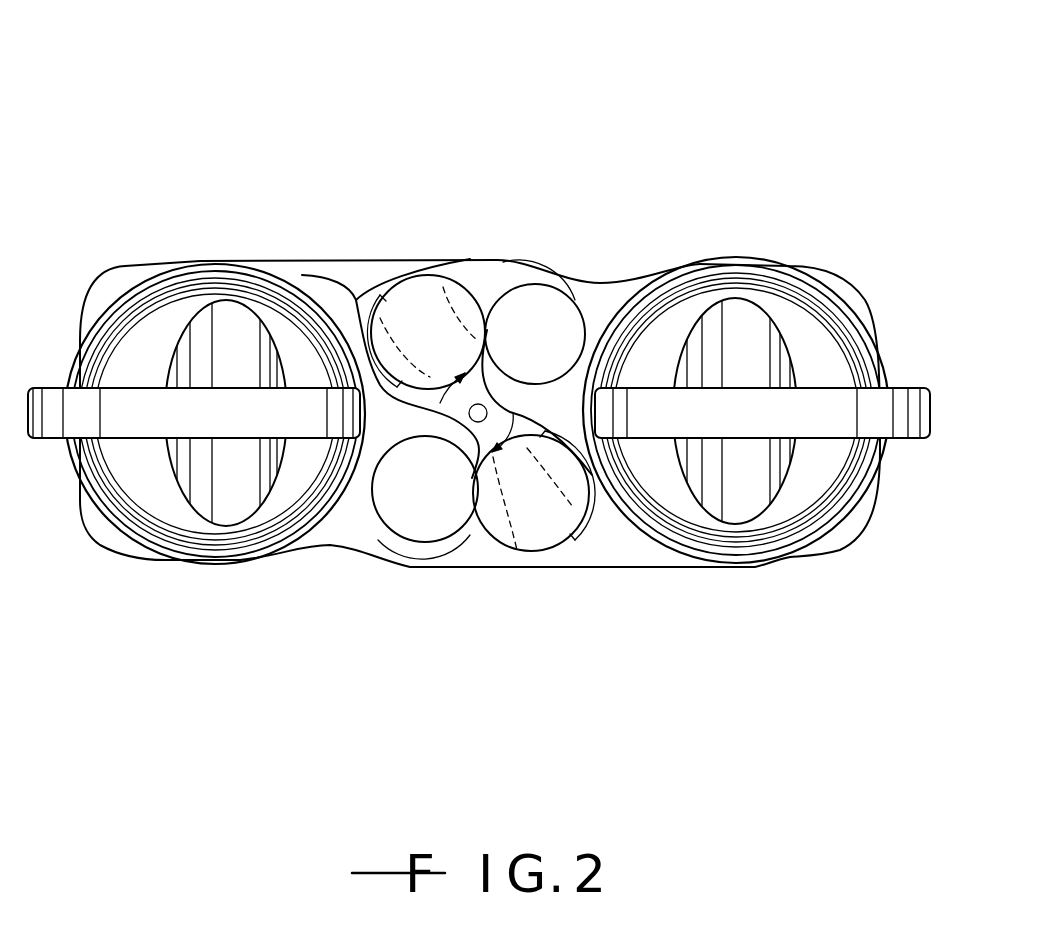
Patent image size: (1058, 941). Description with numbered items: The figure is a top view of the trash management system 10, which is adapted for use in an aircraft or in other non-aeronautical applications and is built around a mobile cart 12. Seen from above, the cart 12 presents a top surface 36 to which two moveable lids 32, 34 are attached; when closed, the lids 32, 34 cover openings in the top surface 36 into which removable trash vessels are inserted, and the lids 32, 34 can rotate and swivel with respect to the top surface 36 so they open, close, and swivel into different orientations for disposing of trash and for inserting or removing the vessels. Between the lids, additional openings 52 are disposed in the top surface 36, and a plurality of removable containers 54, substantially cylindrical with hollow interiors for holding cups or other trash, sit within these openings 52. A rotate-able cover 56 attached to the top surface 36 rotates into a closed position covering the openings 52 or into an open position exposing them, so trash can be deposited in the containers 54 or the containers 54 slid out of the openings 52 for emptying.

The trash management system 10 is at (635, 112).
The mobile cart 12 is at (817, 560).
The moveable lid 32 is at (147, 315).
The moveable lid 34 is at (813, 339).
The top surface 36 is at (597, 283).
The additional openings 52 is at (527, 297).
The removable containers 54 is at (493, 297).
The rotate-able cover 56 is at (403, 347).